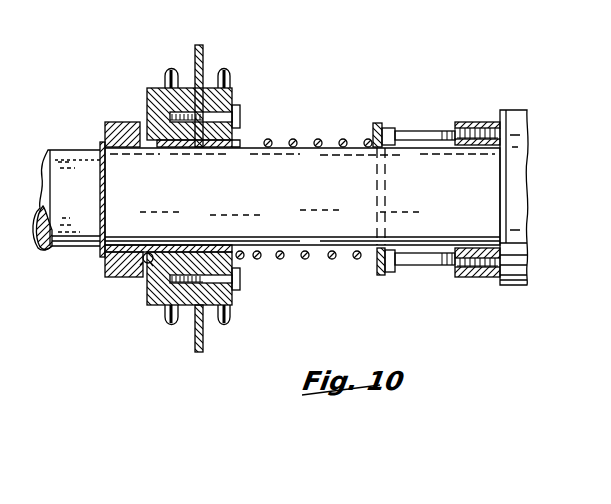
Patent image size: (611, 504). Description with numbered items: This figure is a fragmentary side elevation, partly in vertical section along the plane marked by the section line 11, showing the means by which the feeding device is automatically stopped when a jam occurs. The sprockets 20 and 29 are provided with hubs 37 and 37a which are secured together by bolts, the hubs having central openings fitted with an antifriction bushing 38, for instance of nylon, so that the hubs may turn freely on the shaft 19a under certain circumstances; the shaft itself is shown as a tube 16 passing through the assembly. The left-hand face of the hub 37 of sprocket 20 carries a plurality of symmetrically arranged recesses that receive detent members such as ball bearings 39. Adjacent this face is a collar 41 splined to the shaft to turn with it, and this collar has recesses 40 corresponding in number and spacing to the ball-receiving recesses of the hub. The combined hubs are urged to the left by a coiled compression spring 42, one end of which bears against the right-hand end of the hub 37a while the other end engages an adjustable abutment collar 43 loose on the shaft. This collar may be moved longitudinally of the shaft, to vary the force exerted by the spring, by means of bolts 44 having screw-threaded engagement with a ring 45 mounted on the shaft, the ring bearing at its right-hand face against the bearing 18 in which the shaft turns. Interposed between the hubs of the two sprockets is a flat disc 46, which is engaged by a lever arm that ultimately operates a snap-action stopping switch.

The section line 11- 11 is at (129, 193).
The tubular shaft 16 is at (250, 190).
The bearing 18 is at (539, 172).
The shaft 19a is at (70, 134).
The sprocket 20 is at (150, 184).
The sprocket 29 is at (258, 183).
The hub 37 is at (164, 190).
The hub 37a is at (248, 179).
The antifriction bushing 38 is at (271, 124).
The ball bearings 39 is at (120, 301).
The recesses 40 is at (147, 288).
The collar 41 is at (89, 216).
The coiled compression spring 42 is at (304, 225).
The adjustable abutment collar 43 is at (366, 221).
The bolts 44 is at (422, 228).
The ring 45 is at (475, 173).
The flat disc 46 is at (231, 180).